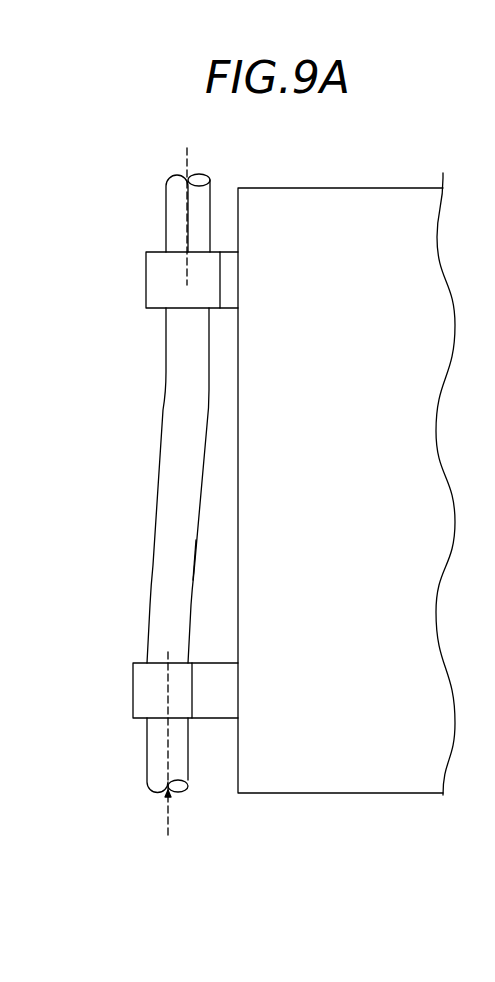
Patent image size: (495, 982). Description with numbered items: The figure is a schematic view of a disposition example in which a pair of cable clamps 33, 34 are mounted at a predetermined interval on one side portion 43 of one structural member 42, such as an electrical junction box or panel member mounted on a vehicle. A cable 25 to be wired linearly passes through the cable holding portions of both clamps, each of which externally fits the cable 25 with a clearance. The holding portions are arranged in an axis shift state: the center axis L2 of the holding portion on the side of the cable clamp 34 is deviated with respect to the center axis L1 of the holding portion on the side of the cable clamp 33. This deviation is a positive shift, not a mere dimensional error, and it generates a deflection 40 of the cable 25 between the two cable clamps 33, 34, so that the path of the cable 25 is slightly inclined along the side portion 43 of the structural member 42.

The cable 25 is at (172, 380).
The deflection 40 is at (168, 491).
The cable clamp 33 is at (146, 268).
The cable clamp 34 is at (133, 695).
The structural member 42 is at (395, 222).
The side portion 43 is at (239, 587).
The center axis L1 is at (189, 153).
The center axis L2 is at (170, 821).